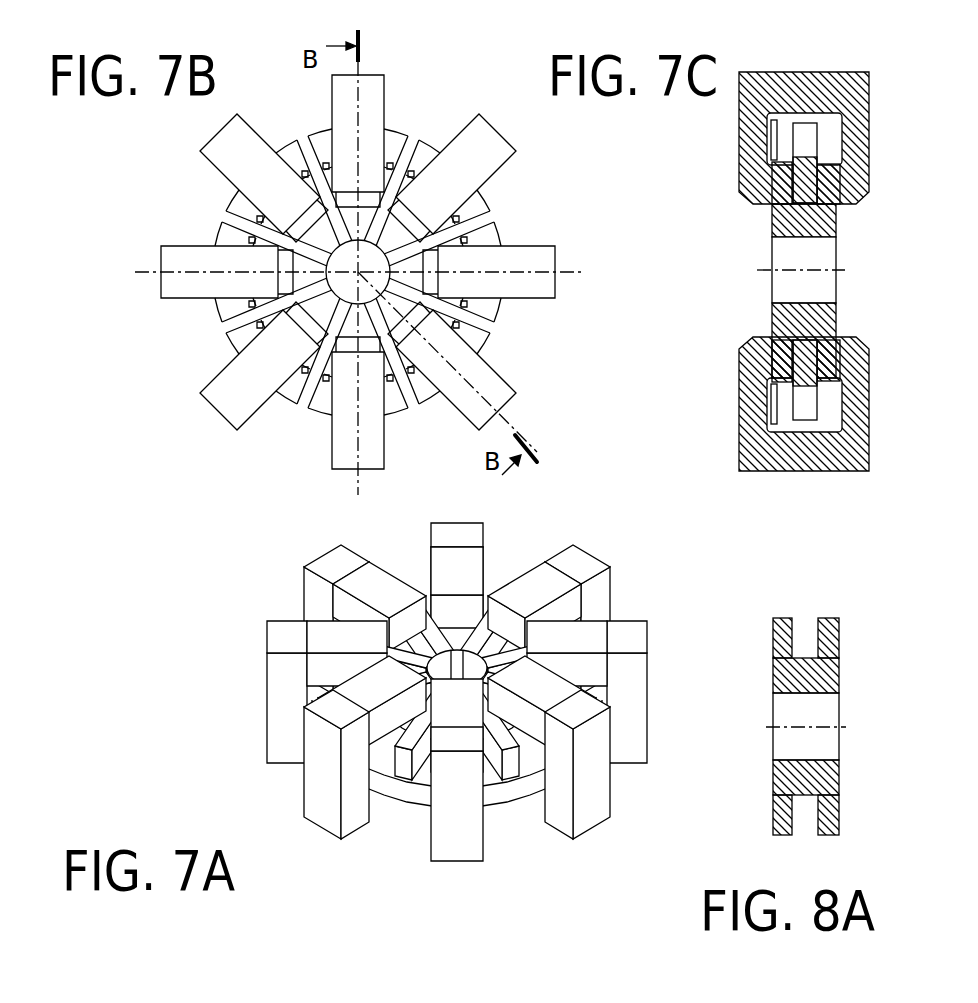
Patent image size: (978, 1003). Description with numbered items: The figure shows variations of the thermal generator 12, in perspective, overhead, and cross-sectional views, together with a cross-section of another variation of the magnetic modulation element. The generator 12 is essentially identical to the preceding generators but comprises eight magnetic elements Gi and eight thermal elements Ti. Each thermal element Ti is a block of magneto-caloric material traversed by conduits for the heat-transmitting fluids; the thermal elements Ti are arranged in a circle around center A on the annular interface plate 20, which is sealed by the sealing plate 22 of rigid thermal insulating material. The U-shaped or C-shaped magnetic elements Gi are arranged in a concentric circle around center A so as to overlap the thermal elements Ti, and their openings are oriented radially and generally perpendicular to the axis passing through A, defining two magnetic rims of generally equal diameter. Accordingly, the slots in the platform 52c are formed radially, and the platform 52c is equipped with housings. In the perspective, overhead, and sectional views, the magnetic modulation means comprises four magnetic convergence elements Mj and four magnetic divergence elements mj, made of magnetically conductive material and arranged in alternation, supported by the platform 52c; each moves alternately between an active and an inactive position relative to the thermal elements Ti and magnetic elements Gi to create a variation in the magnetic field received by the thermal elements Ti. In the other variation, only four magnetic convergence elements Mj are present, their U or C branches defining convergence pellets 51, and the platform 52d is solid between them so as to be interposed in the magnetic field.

In FIG. 7B, the generator 12 is at (201, 441).
In FIG. 7C, the generator 12 is at (878, 130).
In FIG. 7A, the generator 12 is at (118, 533).
In FIG. 7C, the annular interface plate 20 is at (770, 168).
In FIG. 7C, the sealing plate 22 is at (770, 143).
In FIG. 8A, the convergence pellets 51 is at (838, 620).
In FIG. 7B, the platform 52c is at (322, 292).
In FIG. 7C, the platform 52c is at (833, 237).
In FIG. 7A, the platform 52c is at (495, 650).
In FIG. 8A, the platform 52d is at (838, 680).
In FIG. 7B, the center A is at (352, 268).
In FIG. 7C, the center A is at (765, 272).
In FIG. 8A, the center A is at (800, 727).
In FIG. 7B, the thermal element Ti is at (397, 146).
In FIG. 7A, the thermal element Ti is at (380, 762).
In FIG. 7B, the magnetic convergence element Mj is at (393, 198).
In FIG. 7C, the magnetic convergence element Mj is at (870, 196).
In FIG. 7A, the magnetic convergence element Mj is at (410, 592).
In FIG. 7B, the magnetic divergence element mj is at (400, 232).
In FIG. 7C, the magnetic divergence element mj is at (870, 388).
In FIG. 7A, the magnetic divergence element mj is at (488, 592).
In FIG. 7B, the magnetic element Gi is at (517, 263).
In FIG. 7A, the magnetic element Gi is at (318, 795).